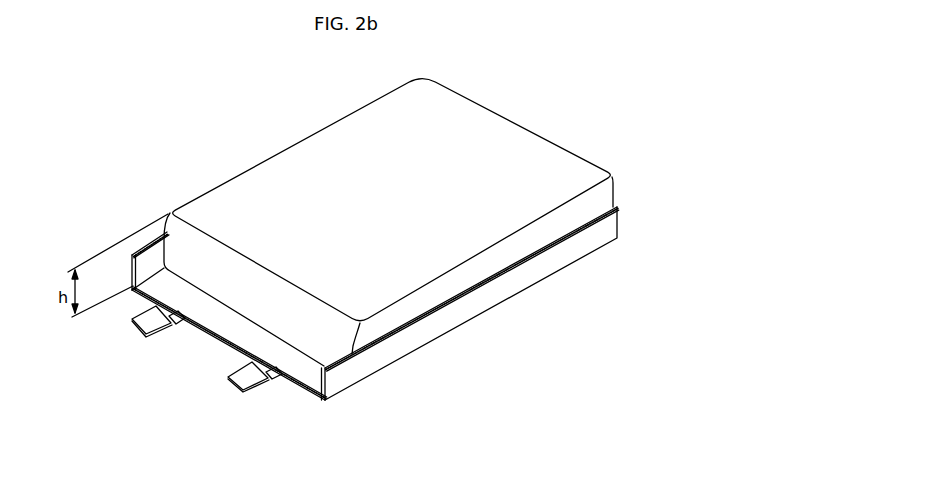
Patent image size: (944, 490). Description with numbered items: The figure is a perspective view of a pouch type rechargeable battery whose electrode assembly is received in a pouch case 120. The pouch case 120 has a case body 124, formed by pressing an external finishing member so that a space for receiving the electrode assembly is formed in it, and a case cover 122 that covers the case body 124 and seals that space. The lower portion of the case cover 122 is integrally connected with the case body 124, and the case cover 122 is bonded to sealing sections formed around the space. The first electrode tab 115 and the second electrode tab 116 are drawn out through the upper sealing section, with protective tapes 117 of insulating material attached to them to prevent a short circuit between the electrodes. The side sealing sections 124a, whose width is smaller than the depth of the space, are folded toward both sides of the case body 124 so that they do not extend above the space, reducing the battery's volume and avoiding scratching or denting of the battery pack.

The pouch case 120 is at (542, 103).
The case body 124 is at (327, 137).
The side sealing section 124a is at (537, 268).
The case cover 122 is at (305, 392).
The second electrode tab 116 is at (147, 322).
The first electrode tab 115 is at (232, 380).
The protective tape 117 is at (258, 378).